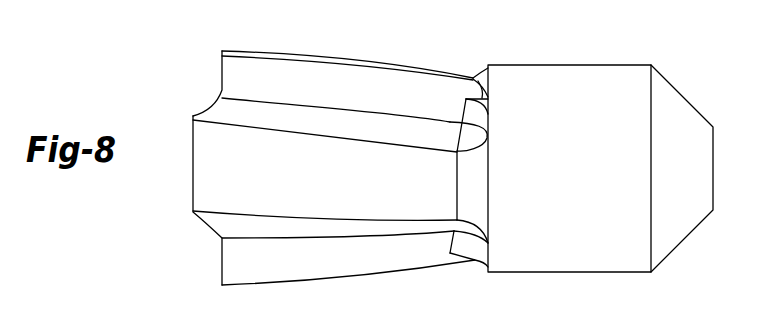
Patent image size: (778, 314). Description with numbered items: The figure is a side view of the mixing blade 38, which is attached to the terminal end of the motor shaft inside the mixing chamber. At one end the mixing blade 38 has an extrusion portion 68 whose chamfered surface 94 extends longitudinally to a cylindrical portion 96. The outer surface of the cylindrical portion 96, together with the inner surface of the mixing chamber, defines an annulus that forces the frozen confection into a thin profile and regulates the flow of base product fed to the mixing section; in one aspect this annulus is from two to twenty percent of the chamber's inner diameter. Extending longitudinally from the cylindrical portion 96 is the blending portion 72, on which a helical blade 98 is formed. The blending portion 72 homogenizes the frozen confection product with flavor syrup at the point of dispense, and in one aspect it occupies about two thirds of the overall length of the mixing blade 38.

The mixing blade 38 is at (431, 142).
The extrusion portion 68 is at (610, 64).
The blending portion 72 is at (374, 60).
The chamfered surface 94 is at (686, 93).
The cylindrical portion 96 is at (222, 90).
The helical blade 98 is at (193, 199).